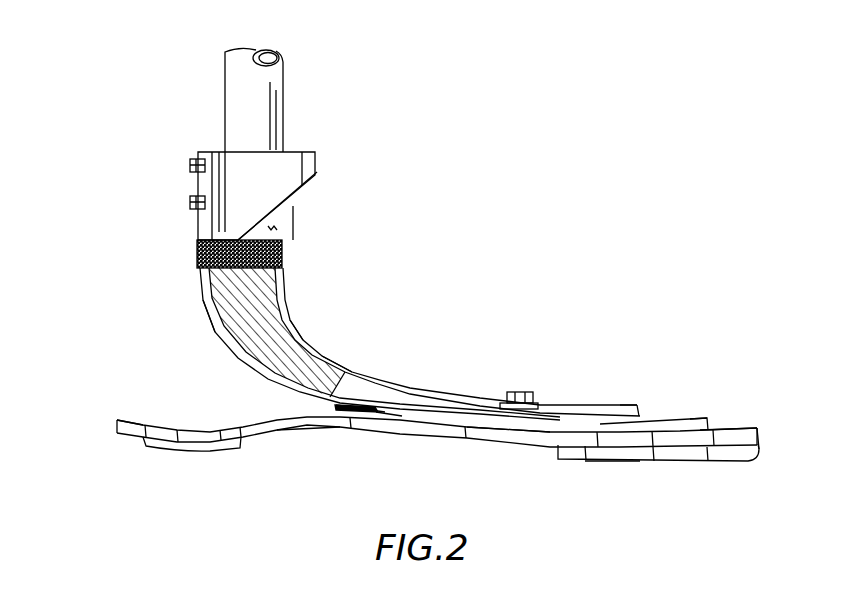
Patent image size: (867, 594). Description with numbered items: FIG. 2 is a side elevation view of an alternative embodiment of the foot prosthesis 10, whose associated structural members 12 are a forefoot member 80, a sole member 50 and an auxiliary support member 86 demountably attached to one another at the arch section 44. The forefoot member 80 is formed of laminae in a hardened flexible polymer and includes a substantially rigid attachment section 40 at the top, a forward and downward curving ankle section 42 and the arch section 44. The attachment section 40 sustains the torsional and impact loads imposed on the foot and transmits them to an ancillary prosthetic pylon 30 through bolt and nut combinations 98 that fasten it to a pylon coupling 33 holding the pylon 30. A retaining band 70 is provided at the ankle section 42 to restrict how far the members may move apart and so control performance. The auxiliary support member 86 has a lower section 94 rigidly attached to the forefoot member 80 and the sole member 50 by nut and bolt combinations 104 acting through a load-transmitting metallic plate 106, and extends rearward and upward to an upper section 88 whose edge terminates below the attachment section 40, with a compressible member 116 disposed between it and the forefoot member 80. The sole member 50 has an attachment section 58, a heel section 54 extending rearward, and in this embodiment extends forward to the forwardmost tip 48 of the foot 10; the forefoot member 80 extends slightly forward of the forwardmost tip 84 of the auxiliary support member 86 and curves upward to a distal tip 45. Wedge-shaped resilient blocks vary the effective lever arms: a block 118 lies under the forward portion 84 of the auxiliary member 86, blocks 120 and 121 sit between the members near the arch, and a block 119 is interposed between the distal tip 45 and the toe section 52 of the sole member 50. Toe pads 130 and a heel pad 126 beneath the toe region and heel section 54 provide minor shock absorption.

The foot prosthesis 10 is at (470, 212).
The associated structural members 12 is at (378, 418).
The ancillary prosthetic pylon 30 is at (278, 75).
The pylon coupling 33 is at (300, 168).
The attachment section 40 is at (196, 224).
The ankle section 42 is at (252, 366).
The arch section 44 is at (447, 436).
The distal tip 45 is at (705, 414).
The forwardmost tip 48 is at (760, 440).
The sole member 50 is at (334, 430).
The toe section 52 is at (687, 448).
The heel section 54 is at (140, 424).
The attachment section 58 is at (521, 441).
The retaining band 70 is at (194, 256).
The forefoot member 80 is at (206, 299).
The forwardmost tip of auxiliary support member 84 is at (634, 404).
The auxiliary support member 86 is at (300, 317).
The upper section 88 is at (286, 282).
The lower section 94 is at (478, 399).
The bolt and nut combinations 98 is at (186, 166).
The nut and bolt combinations 104 is at (525, 389).
The load-transmitting metallic plate 106 is at (540, 400).
The compressible member 116 is at (340, 357).
The block 118 is at (636, 421).
The block 119 is at (714, 427).
The block 120 is at (334, 408).
The block 121 is at (404, 419).
The heel pad 126 is at (118, 437).
The toe pads 130 is at (598, 465).